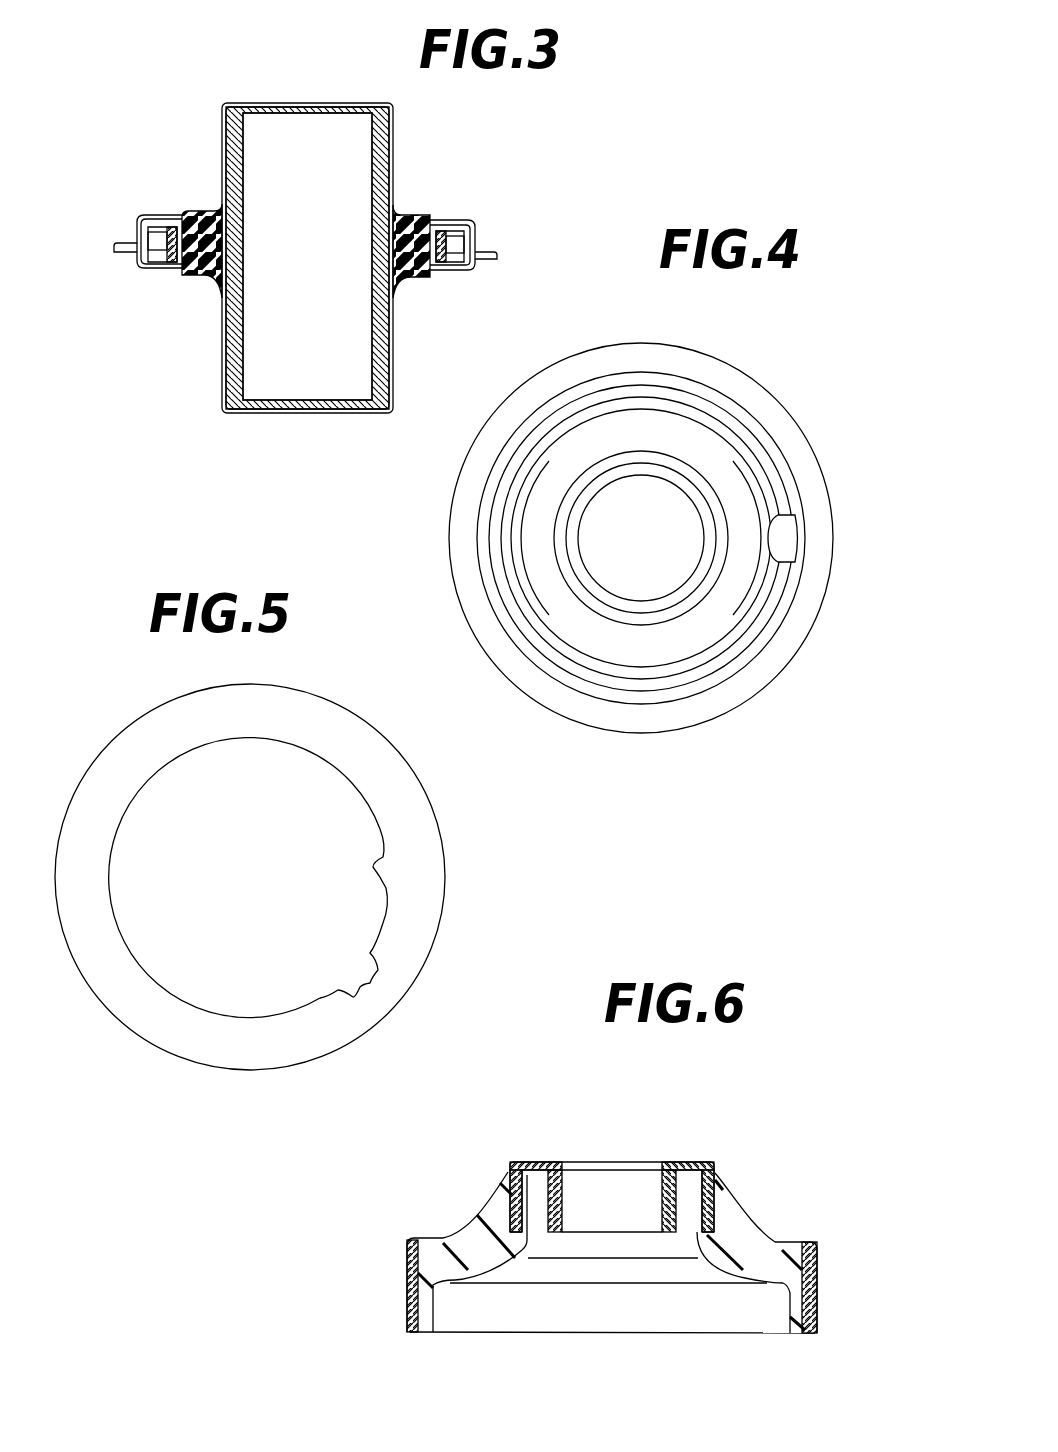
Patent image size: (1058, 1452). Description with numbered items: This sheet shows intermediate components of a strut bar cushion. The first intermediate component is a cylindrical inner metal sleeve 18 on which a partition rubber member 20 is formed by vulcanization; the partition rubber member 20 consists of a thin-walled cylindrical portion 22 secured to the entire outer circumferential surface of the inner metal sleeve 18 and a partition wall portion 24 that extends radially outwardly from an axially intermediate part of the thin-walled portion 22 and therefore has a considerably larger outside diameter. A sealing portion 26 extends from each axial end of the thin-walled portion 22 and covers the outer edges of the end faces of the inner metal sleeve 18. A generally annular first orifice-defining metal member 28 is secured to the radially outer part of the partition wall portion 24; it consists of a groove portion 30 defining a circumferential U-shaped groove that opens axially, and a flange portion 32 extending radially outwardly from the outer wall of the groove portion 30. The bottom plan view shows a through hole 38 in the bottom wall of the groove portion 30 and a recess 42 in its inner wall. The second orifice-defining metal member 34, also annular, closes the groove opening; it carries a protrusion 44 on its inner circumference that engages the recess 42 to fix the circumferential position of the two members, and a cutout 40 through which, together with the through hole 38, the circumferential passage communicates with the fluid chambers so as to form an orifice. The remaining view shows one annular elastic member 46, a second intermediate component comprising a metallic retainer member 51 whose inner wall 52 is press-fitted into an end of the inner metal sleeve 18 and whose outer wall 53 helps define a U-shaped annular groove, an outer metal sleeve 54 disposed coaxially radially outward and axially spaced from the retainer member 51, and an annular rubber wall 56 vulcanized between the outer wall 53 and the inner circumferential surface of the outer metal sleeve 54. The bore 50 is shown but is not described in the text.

In FIG. 3, the inner metal sleeve 18 is at (238, 384).
In FIG. 4, the inner metal sleeve 18 is at (579, 546).
In FIG. 3, the partition rubber member 20 is at (402, 205).
In FIG. 4, the partition rubber member 20 is at (503, 632).
In FIG. 3, the thin-walled cylindrical portion 22 is at (218, 358).
In FIG. 3, the partition wall portion 24 is at (197, 213).
In FIG. 4, the partition wall portion 24 is at (682, 406).
In FIG. 3, the sealing portion 26 is at (227, 103).
In FIG. 4, the sealing portion 26 is at (670, 464).
In FIG. 3, the first orifice-defining metal member 28 is at (130, 226).
In FIG. 4, the first orifice-defining metal member 28 is at (782, 685).
In FIG. 3, the groove portion 30 is at (160, 218).
In FIG. 3, the flange portion 32 is at (122, 256).
In FIG. 4, the flange portion 32 is at (677, 714).
In FIG. 5, the second orifice-defining metal member 34 is at (115, 722).
In FIG. 3, the through hole 38 is at (455, 224).
In FIG. 4, the through hole 38 is at (792, 528).
In FIG. 5, the cutout 40 is at (370, 985).
In FIG. 3, the recess 42 is at (440, 284).
In FIG. 4, the recess 42 is at (776, 541).
In FIG. 5, the protrusion 44 is at (376, 866).
In FIG. 6, the annular elastic member 46 is at (595, 1196).
In FIG. 3, the bore 50 is at (365, 285).
In FIG. 4, the bore 50 is at (688, 580).
In FIG. 6, the retainer member 51 is at (543, 1160).
In FIG. 6, the inner wall 52 is at (650, 1168).
In FIG. 6, the outer wall 53 is at (690, 1168).
In FIG. 6, the outer metal sleeve 54 is at (410, 1290).
In FIG. 6, the annular rubber wall 56 is at (478, 1240).